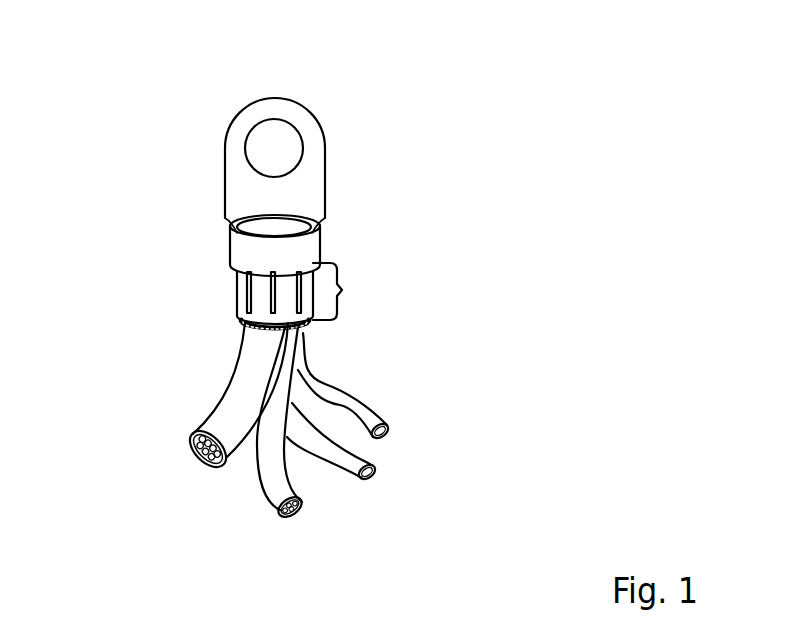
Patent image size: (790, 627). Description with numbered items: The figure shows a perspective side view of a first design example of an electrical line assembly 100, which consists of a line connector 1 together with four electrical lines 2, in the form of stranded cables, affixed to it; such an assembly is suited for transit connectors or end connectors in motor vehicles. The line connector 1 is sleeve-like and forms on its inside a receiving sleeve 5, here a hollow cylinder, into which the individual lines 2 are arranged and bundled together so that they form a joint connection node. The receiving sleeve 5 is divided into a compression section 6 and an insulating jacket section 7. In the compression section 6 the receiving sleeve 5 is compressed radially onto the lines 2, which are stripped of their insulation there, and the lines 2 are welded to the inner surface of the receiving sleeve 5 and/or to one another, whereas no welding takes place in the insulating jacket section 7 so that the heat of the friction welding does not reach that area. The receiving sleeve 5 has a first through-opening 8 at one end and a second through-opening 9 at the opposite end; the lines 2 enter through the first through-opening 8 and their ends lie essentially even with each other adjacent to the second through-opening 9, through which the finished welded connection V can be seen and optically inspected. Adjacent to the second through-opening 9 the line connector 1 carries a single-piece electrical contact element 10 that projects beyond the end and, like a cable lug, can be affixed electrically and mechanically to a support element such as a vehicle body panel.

The electrical line assembly 100 is at (91, 105).
The line connector 1 is at (204, 275).
The electrical lines 2 is at (222, 420).
The receiving sleeve 5 is at (237, 273).
The compression section 6 is at (365, 291).
The insulating jacket section 7 is at (342, 290).
The first through-opening 8 is at (293, 327).
The second through-opening 9 is at (318, 214).
The electrical contact element 10 is at (293, 188).
The welded connection V is at (260, 208).